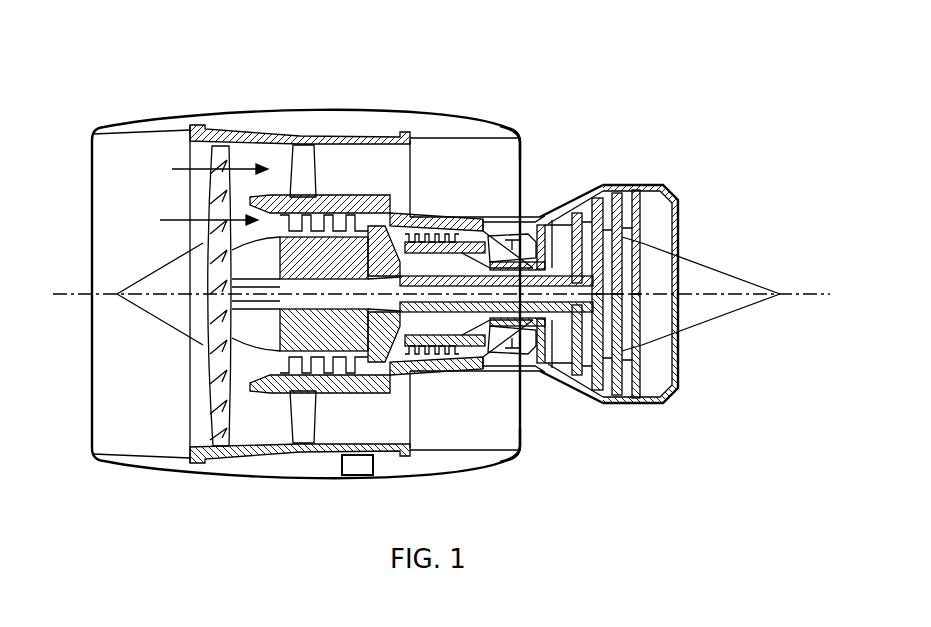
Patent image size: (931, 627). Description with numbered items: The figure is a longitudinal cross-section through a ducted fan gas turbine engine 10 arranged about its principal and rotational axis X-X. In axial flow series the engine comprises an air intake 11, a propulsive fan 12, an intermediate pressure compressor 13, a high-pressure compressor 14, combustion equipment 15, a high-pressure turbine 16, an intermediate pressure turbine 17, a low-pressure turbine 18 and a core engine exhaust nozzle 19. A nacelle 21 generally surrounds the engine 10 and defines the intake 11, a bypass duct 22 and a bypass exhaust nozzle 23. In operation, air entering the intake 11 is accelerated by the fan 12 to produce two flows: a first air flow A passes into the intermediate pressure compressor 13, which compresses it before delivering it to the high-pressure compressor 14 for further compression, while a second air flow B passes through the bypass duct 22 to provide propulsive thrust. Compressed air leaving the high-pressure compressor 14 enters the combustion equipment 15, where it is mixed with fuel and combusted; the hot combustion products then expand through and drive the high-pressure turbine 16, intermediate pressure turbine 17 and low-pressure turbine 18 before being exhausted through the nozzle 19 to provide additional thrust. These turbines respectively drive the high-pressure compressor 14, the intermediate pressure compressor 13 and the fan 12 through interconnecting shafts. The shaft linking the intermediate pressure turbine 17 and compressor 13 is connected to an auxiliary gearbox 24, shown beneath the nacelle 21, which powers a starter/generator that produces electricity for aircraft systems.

The ducted fan gas turbine engine 10 is at (441, 272).
The air intake 11 is at (138, 136).
The propulsive fan 12 is at (210, 420).
The intermediate pressure compressor 13 is at (338, 372).
The high-pressure compressor 14 is at (432, 236).
The combustion equipment 15 is at (495, 353).
The high-pressure turbine 16 is at (540, 370).
The intermediate pressure turbine 17 is at (576, 212).
The low-pressure turbine 18 is at (600, 378).
The core engine exhaust nozzle 19 is at (674, 188).
The nacelle 21 is at (335, 108).
The bypass duct 22 is at (500, 169).
The bypass exhaust nozzle 23 is at (521, 136).
The auxiliary gearbox 24 is at (357, 470).